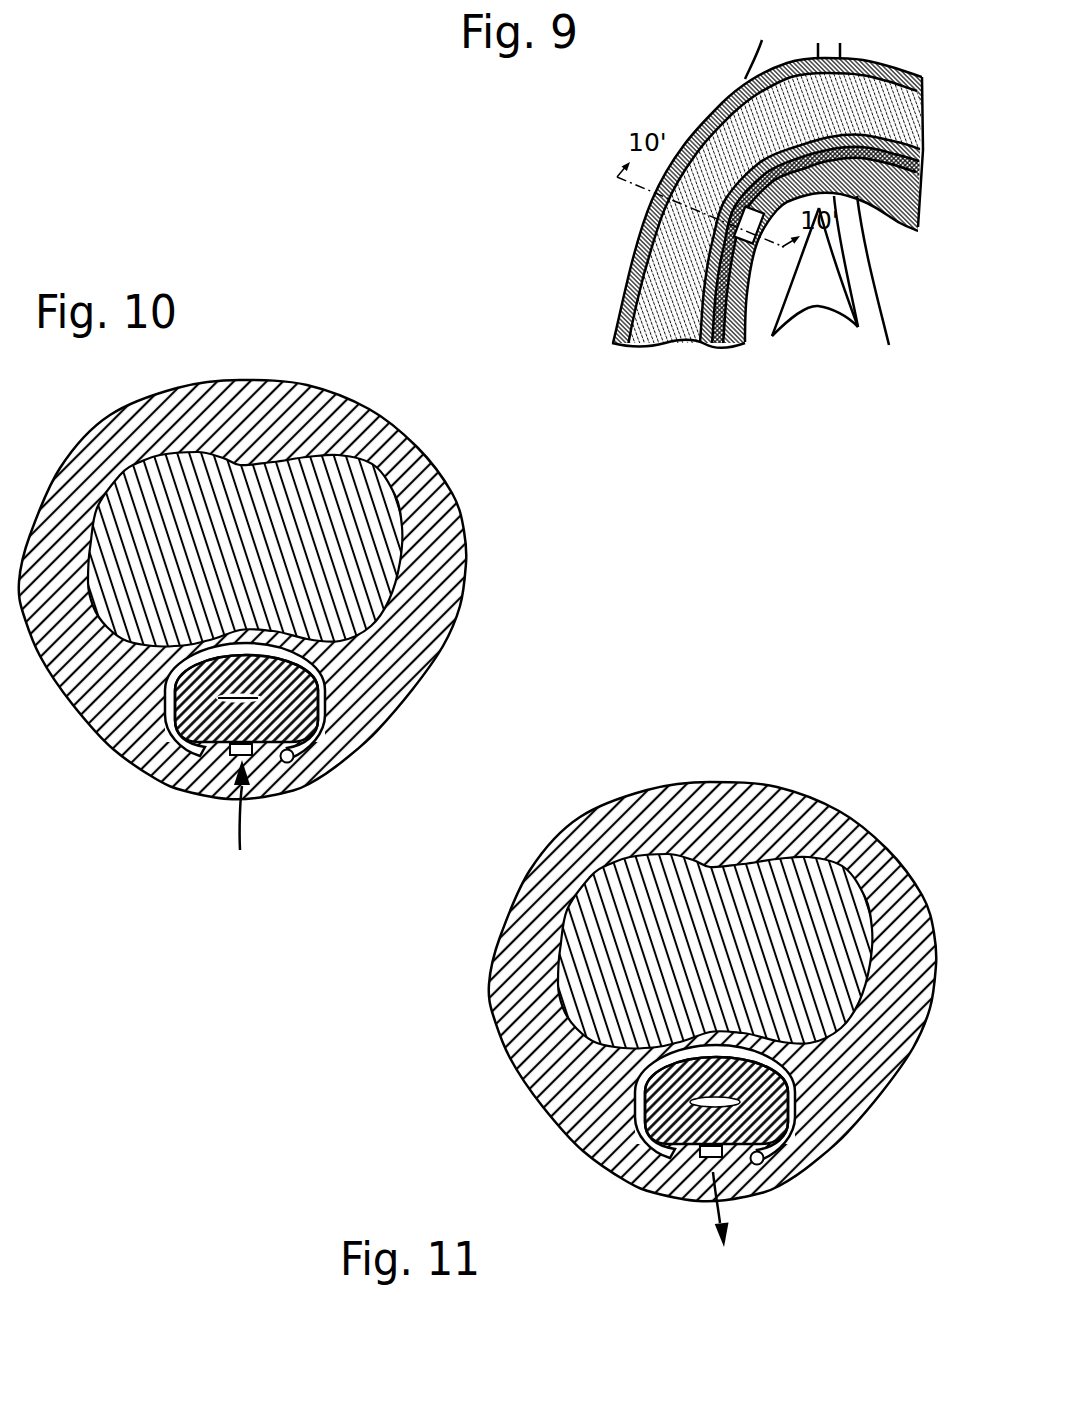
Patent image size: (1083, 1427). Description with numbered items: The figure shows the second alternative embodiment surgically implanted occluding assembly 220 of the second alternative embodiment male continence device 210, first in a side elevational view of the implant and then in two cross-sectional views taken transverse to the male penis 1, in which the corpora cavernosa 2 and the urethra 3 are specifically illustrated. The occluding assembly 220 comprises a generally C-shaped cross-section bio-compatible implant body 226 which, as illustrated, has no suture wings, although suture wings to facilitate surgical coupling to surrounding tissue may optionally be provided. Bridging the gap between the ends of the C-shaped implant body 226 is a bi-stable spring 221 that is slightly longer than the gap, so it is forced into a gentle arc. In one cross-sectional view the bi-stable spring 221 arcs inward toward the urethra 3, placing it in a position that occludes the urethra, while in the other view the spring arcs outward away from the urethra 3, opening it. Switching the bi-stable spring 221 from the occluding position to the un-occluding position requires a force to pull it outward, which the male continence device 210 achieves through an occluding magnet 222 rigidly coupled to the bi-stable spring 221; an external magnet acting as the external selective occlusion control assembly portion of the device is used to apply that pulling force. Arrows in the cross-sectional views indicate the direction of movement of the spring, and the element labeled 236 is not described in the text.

In FIG. 11, the male penis 1 is at (693, 1014).
In FIG. 11, the corpora cavernosa 2 is at (661, 951).
In FIG. 11, the urethra 3 is at (713, 1002).
In FIG. 10, the second alternative embodiment male continence device 210 is at (297, 799).
In FIG. 11, the second alternative embodiment male continence device 210 is at (728, 1155).
In FIG. 9, the second alternative embodiment surgically implanted occluding assembly 220 is at (753, 256).
In FIG. 10, the second alternative embodiment surgically implanted occluding assembly 220 is at (338, 700).
In FIG. 11, the second alternative embodiment surgically implanted occluding assembly 220 is at (775, 1108).
In FIG. 10, the bi-stable spring 221 is at (293, 762).
In FIG. 11, the bi-stable spring 221 is at (806, 1191).
In FIG. 10, the occluding magnet 222 is at (250, 758).
In FIG. 11, the occluding magnet 222 is at (766, 1200).
In FIG. 10, the implant body 226 is at (321, 721).
In FIG. 11, the implant body 226 is at (764, 1127).
In FIG. 10, the insertion direction arrow 236 is at (240, 849).
In FIG. 11, the insertion direction arrow 236 is at (679, 1210).